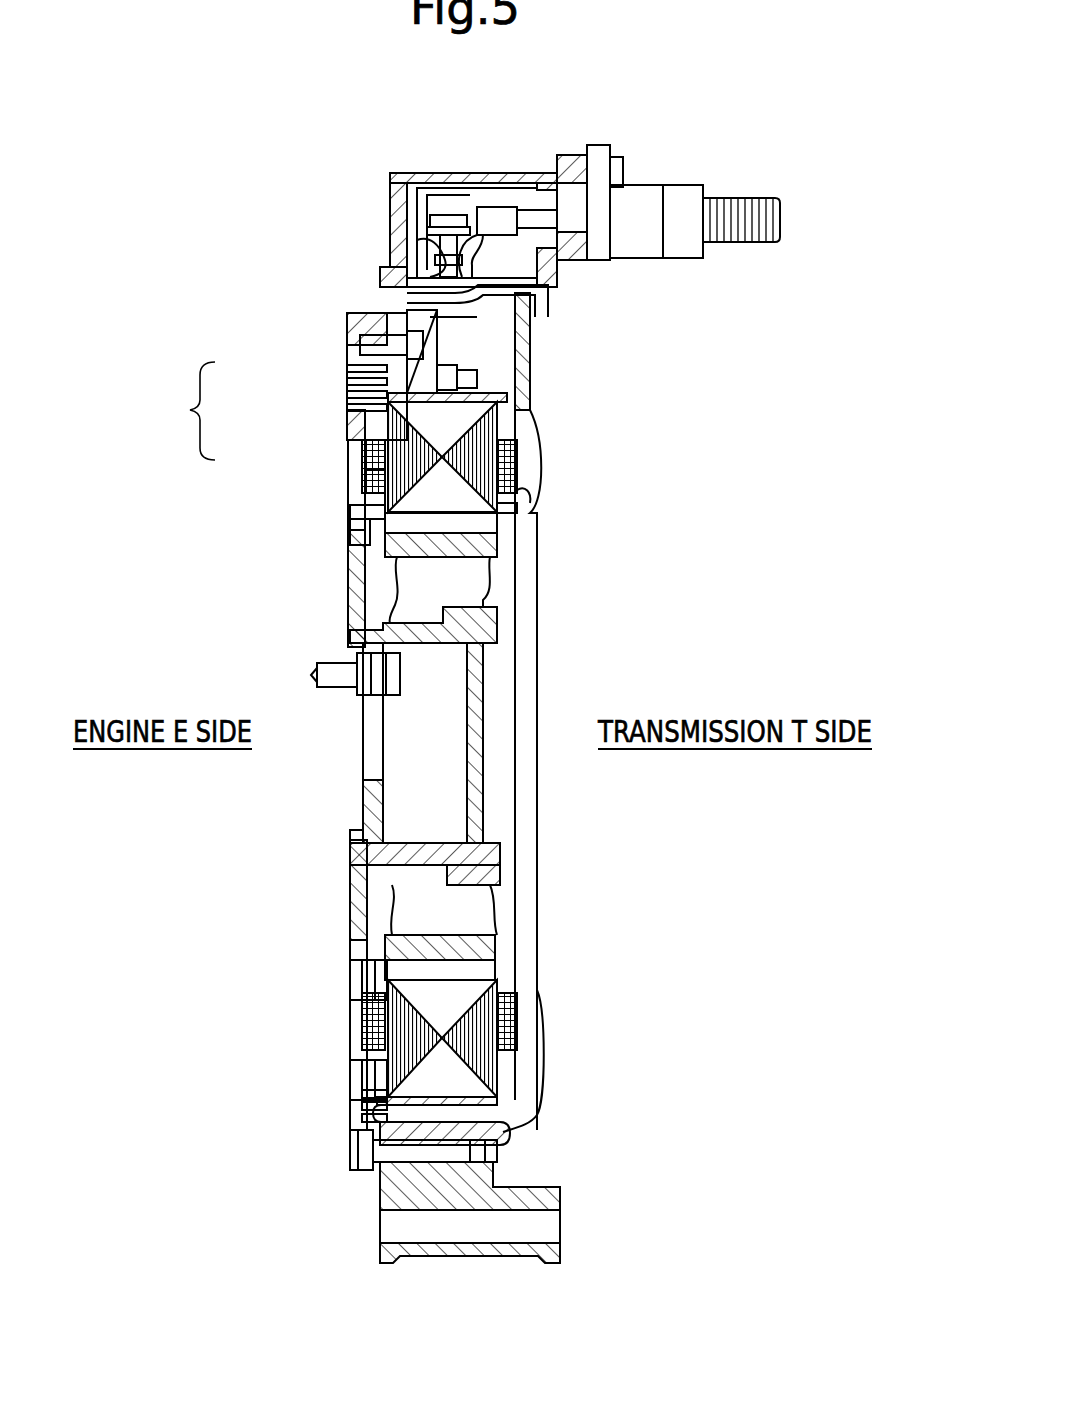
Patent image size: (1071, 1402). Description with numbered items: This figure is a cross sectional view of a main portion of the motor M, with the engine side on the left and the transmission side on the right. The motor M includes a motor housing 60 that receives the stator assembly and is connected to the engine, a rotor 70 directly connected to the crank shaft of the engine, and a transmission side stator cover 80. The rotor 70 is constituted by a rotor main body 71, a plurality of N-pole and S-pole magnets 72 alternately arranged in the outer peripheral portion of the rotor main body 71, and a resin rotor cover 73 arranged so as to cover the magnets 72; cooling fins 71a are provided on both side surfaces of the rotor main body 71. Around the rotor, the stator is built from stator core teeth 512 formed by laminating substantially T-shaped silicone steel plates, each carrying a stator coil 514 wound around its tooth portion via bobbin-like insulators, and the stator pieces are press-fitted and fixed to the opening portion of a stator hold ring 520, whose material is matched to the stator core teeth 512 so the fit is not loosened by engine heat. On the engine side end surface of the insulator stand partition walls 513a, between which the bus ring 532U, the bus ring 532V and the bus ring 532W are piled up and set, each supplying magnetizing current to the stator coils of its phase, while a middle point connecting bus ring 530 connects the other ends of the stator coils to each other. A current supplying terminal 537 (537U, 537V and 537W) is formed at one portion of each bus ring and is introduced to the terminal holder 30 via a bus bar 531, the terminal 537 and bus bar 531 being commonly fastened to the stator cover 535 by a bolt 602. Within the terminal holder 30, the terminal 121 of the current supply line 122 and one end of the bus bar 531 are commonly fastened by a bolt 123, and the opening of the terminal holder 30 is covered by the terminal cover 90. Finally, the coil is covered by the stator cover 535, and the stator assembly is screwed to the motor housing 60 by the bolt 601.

The terminal cover 90 is at (440, 176).
The terminal 121 is at (495, 210).
The current supply line 122 is at (640, 240).
The bolt 123 is at (448, 212).
The terminal holder 30 is at (418, 218).
The bolt 602 is at (388, 320).
The bus bar 531 is at (505, 300).
The current supplying terminal 537 is at (171, 411).
The current supplying terminal 537U is at (358, 367).
The current supplying terminal 537V is at (360, 395).
The current supplying terminal 537W is at (365, 410).
The motor M is at (615, 369).
The stator core teeth 512 is at (483, 425).
The transmission side stator cover 80 is at (540, 452).
The rotor cover 73 is at (537, 533).
The magnets 72 is at (477, 527).
The cooling fins 71a is at (465, 580).
The rotor main body 71 is at (493, 620).
The rotor 70 is at (490, 677).
The middle point connecting bus ring 530 is at (352, 540).
The stator cover 535 is at (353, 893).
The partition walls 513a is at (352, 983).
The stator coil 514 is at (350, 1015).
The stator hold ring 520 is at (477, 1063).
The bus ring 532U is at (352, 1093).
The bus ring 532V is at (350, 1113).
The bus ring 532W is at (352, 1130).
The bolt 601 is at (350, 1180).
The motor housing 60 is at (535, 1187).